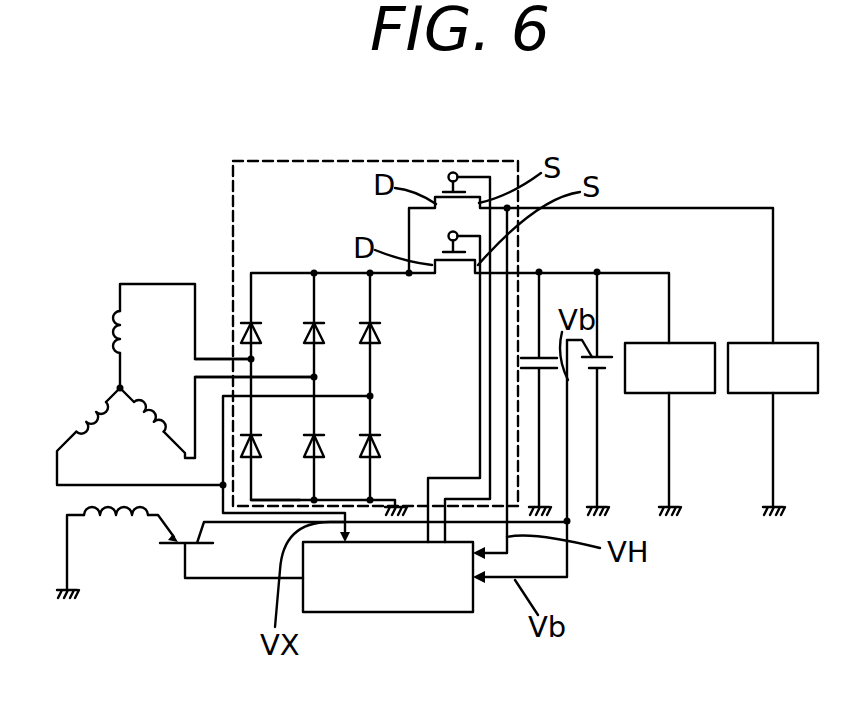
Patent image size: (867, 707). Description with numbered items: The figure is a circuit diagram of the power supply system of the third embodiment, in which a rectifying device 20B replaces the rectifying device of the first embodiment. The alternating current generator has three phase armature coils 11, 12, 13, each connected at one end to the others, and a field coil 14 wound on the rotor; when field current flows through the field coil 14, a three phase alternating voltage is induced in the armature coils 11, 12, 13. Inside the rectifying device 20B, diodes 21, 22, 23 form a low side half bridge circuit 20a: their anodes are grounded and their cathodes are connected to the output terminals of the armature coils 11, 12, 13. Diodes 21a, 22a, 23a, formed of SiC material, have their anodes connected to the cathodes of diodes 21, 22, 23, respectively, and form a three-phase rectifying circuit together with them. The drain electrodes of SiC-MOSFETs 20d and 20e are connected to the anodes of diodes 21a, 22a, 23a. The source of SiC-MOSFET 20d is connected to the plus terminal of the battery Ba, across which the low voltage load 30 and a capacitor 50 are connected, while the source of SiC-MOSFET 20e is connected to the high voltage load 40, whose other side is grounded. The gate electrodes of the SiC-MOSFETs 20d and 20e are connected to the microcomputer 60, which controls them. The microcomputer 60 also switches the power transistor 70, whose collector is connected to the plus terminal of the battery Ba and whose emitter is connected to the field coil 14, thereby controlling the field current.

The rectifying device 20B is at (362, 160).
The SiC-MOSFET 20e is at (440, 200).
The SiC-MOSFET 20d is at (438, 265).
The low side half bridge circuit 20a is at (252, 508).
The diode 21a is at (250, 323).
The diode 22a is at (314, 323).
The diode 23a is at (372, 323).
The diode 21 is at (250, 436).
The diode 22 is at (314, 436).
The diode 23 is at (372, 436).
The armature coil 11 is at (130, 324).
The armature coil 12 is at (152, 410).
The armature coil 13 is at (83, 418).
The field coil 14 is at (110, 517).
The power transistor 70 is at (180, 545).
The capacitor 50 is at (539, 355).
The battery Ba is at (600, 373).
The low voltage load 30 is at (672, 340).
The high voltage load 40 is at (774, 340).
The microcomputer 60 is at (407, 613).